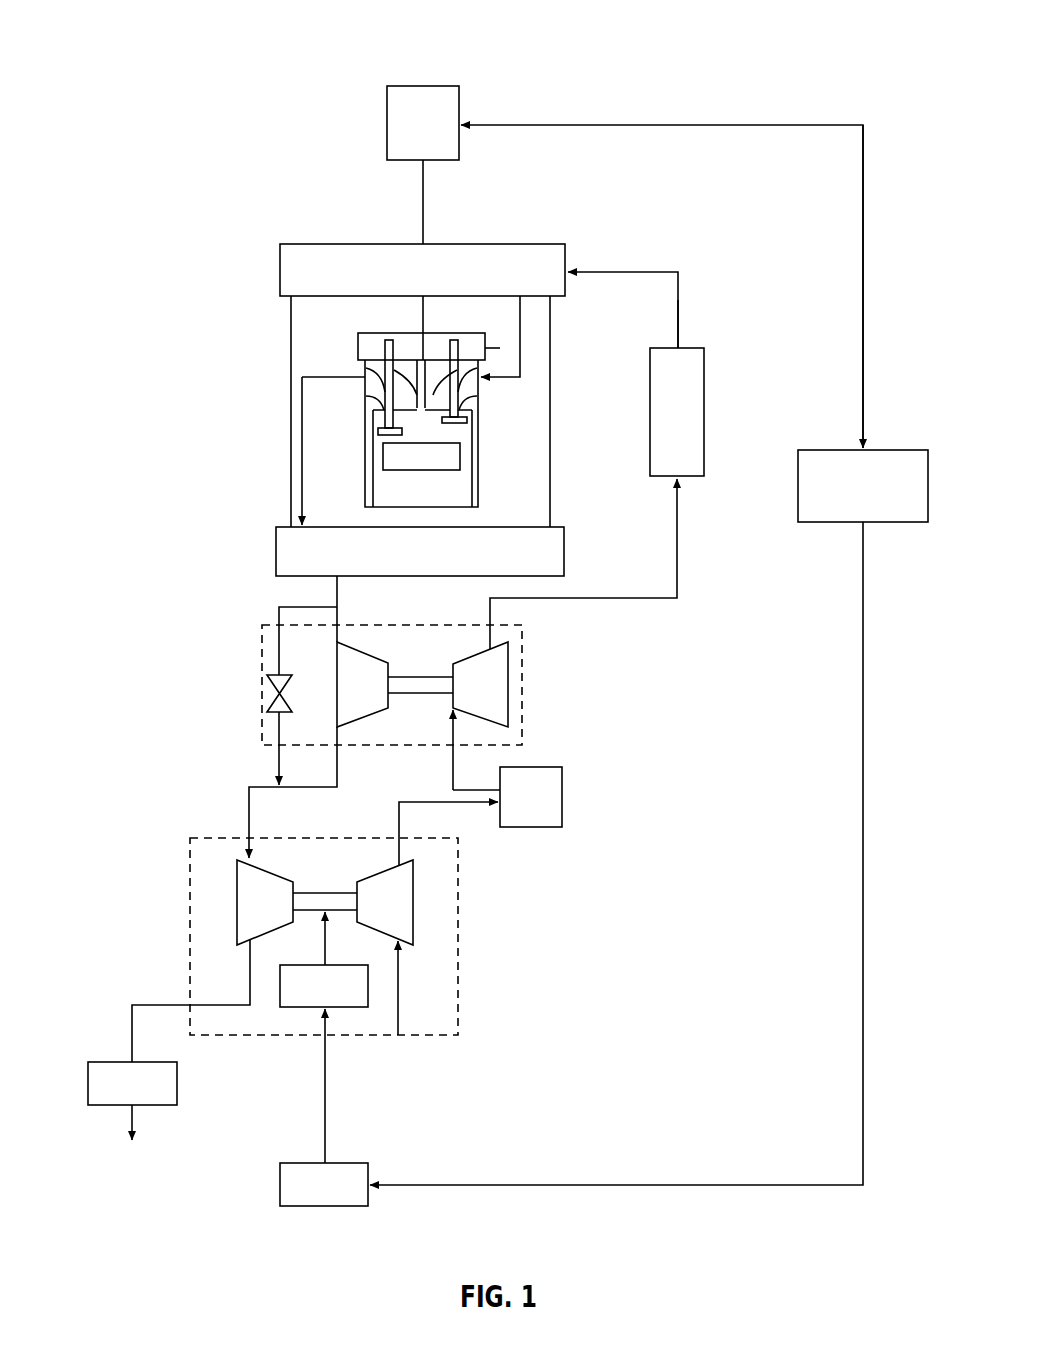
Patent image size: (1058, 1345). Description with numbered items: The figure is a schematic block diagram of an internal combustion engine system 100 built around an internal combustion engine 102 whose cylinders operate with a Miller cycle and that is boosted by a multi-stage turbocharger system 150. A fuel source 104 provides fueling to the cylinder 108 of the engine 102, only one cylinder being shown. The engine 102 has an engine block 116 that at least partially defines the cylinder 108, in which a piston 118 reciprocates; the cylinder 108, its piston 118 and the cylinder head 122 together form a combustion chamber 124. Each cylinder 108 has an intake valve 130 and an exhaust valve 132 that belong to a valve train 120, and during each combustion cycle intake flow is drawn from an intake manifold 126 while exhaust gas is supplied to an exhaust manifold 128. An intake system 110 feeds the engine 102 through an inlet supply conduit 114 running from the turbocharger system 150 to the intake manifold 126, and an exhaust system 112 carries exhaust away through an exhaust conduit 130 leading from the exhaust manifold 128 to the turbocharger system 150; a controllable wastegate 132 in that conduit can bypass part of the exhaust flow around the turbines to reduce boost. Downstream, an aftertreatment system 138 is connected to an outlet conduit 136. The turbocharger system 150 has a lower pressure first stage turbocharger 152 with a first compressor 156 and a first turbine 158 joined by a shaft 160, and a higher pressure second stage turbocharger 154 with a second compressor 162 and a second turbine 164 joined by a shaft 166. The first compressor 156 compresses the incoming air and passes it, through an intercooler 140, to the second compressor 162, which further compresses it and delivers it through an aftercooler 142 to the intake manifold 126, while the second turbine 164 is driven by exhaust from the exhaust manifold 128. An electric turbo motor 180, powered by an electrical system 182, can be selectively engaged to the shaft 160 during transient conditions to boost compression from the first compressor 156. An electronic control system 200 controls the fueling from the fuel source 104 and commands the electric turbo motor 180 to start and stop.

The internal combustion engine system 100 is at (829, 42).
The internal combustion engine 102 is at (289, 416).
The fuel source 104 is at (442, 136).
The cylinder 108 is at (363, 456).
The intake system 110 is at (598, 677).
The exhaust system 112 is at (164, 799).
The inlet supply conduit 114 is at (679, 318).
The engine block 116 is at (551, 500).
The piston 118 is at (453, 460).
The valve train 120 is at (489, 348).
The cylinder head 122 is at (280, 275).
The combustion chamber 124 is at (434, 360).
The intake manifold 126 is at (442, 284).
The exhaust manifold 128 is at (442, 565).
The intake valve / exhaust conduit 130 is at (453, 338).
The exhaust valve / wastegate 132 is at (390, 338).
The outlet conduit 136 is at (131, 1033).
The aftertreatment system 138 is at (151, 1097).
The intercooler 140 is at (562, 792).
The aftercooler 142 is at (692, 417).
The multi-stage turbocharger system 150 is at (598, 767).
The first stage turbocharger 152 is at (463, 892).
The second stage turbocharger 154 is at (526, 647).
The first compressor 156 is at (409, 918).
The first turbine 158 is at (234, 902).
The shaft 160 is at (327, 892).
The second compressor 162 is at (503, 697).
The second turbine 164 is at (333, 712).
The shaft 166 is at (422, 694).
The electric turbo motor 180 is at (353, 1003).
The electrical system 182 is at (343, 1199).
The electronic control system 200 is at (882, 501).